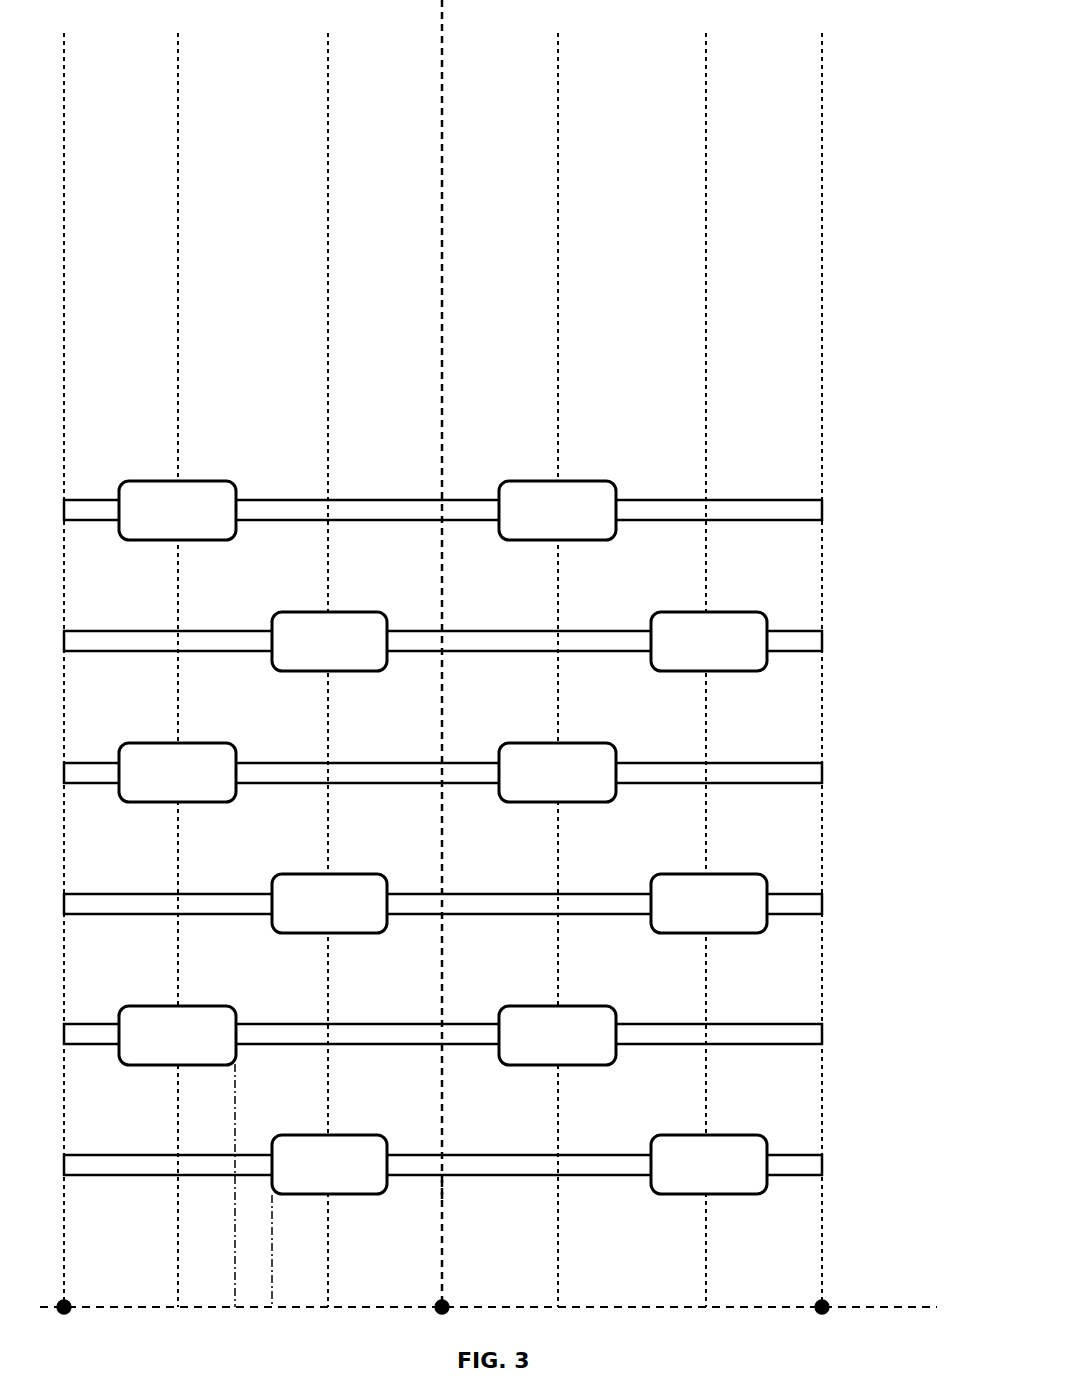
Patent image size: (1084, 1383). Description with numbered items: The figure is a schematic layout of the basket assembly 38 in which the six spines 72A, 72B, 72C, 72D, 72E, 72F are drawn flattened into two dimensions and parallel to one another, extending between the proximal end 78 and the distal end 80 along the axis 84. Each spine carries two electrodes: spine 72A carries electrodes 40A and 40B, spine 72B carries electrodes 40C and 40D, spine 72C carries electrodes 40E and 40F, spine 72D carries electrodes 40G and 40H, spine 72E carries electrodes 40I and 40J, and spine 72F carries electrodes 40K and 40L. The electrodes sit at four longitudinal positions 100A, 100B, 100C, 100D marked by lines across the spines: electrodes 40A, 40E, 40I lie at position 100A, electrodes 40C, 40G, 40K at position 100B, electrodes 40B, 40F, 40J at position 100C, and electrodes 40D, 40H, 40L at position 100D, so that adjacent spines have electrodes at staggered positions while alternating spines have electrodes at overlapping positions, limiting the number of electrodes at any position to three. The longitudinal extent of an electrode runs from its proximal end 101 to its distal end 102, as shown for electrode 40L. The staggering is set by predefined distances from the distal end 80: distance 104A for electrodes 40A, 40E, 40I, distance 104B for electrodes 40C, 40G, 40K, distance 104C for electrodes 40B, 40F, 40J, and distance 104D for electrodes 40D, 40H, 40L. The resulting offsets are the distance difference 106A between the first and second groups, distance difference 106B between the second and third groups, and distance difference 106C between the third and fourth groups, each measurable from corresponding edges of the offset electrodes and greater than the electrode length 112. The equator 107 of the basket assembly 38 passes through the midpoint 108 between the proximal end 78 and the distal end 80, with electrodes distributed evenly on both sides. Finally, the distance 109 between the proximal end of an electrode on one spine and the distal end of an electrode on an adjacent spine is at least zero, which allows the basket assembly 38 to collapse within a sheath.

The basket assembly 38 is at (888, 62).
The electrode 40A is at (150, 481).
The electrode 40B is at (538, 481).
The electrode 40C is at (340, 612).
The electrode 40D is at (688, 612).
The electrode 40E is at (152, 743).
The electrode 40F is at (538, 743).
The electrode 40G is at (347, 874).
The electrode 40H is at (690, 874).
The electrode 40I is at (157, 1006).
The electrode 40J is at (538, 1006).
The electrode 40K is at (345, 1135).
The electrode 40L is at (690, 1135).
The spine 72A is at (740, 500).
The spine 72B is at (786, 631).
The spine 72C is at (764, 763).
The spine 72D is at (790, 894).
The spine 72E is at (759, 1024).
The spine 72F is at (790, 1155).
The proximal end 78 is at (64, 165).
The distal end 80 is at (822, 387).
The axis 84 is at (912, 1306).
The longitudinal position 100A is at (178, 392).
The longitudinal position 100B is at (328, 302).
The longitudinal position 100C is at (558, 372).
The longitudinal position 100D is at (706, 426).
The proximal end of electrode 101 is at (630, 1197).
The distal end of electrode 102 is at (778, 1195).
The distance 104A is at (812, 108).
The distance 104B is at (610, 110).
The distance 104C is at (568, 218).
The distance 104D is at (812, 258).
The distance difference 106A is at (318, 146).
The distance difference 106B is at (548, 183).
The distance difference 106C is at (696, 295).
The equator 107 is at (446, 1192).
The midpoint 108 is at (188, 52).
The distance 109 is at (264, 1250).
The length 112 is at (129, 557).